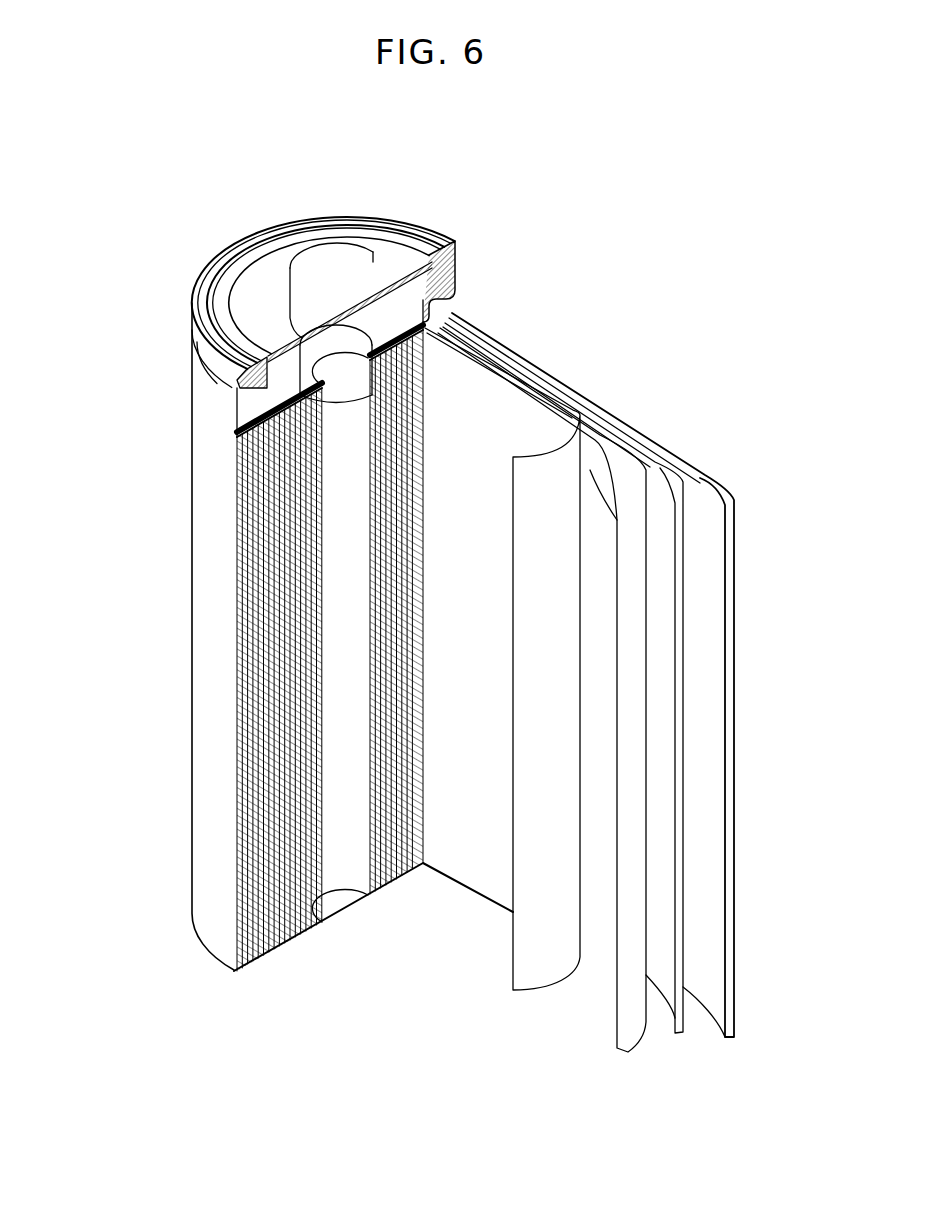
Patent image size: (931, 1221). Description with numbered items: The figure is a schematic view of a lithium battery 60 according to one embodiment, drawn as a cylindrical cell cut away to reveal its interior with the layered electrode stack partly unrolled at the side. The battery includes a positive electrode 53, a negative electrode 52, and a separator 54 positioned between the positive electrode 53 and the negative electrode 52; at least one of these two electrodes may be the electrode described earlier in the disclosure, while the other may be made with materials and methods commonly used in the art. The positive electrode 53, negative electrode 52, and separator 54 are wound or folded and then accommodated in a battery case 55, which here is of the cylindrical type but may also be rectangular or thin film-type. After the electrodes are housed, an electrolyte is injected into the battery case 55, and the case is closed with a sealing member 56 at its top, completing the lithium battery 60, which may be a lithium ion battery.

The lithium battery 60 is at (386, 168).
The negative electrode 52 is at (710, 470).
The positive electrode 53 is at (632, 468).
The separator 54 is at (677, 480).
The battery case 55 is at (200, 640).
The sealing member 56 is at (315, 258).